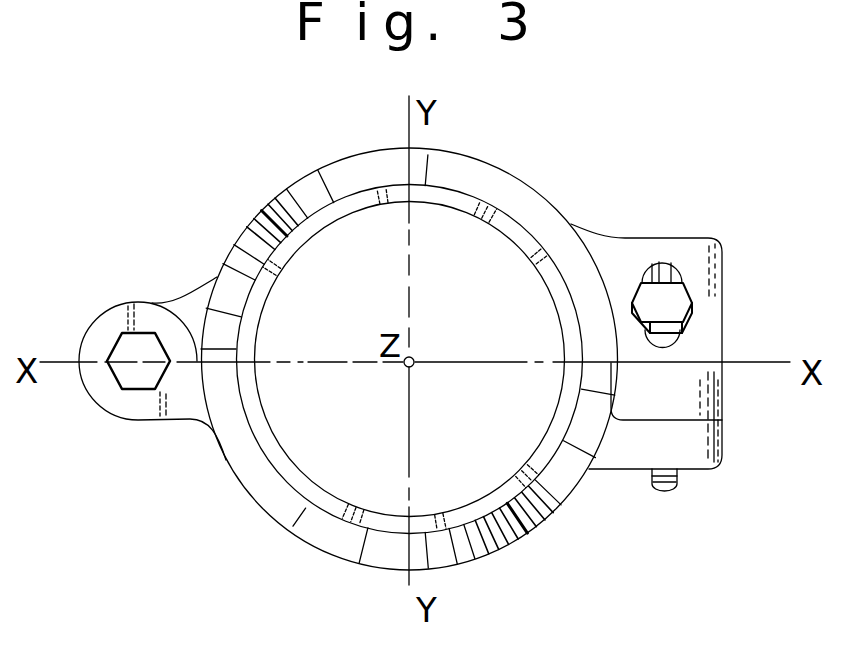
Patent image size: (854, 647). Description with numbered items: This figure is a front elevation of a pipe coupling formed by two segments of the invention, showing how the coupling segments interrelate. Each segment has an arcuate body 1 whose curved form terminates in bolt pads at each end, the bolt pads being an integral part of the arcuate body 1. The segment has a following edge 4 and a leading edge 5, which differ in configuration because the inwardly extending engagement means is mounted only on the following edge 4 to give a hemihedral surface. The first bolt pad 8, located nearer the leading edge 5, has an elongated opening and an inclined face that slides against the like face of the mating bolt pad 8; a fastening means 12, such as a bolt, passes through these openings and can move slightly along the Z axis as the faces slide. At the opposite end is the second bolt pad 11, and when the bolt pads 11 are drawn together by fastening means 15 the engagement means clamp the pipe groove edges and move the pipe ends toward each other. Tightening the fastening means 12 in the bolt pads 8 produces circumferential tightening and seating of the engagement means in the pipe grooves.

The arcuate body 1 is at (584, 172).
The following edge 4 is at (545, 498).
The leading edge 5 is at (256, 240).
The bolt pad 8 is at (693, 253).
The second bolt pad 11 is at (97, 373).
The fastening means 12 is at (673, 300).
The fastening means 15 is at (125, 358).